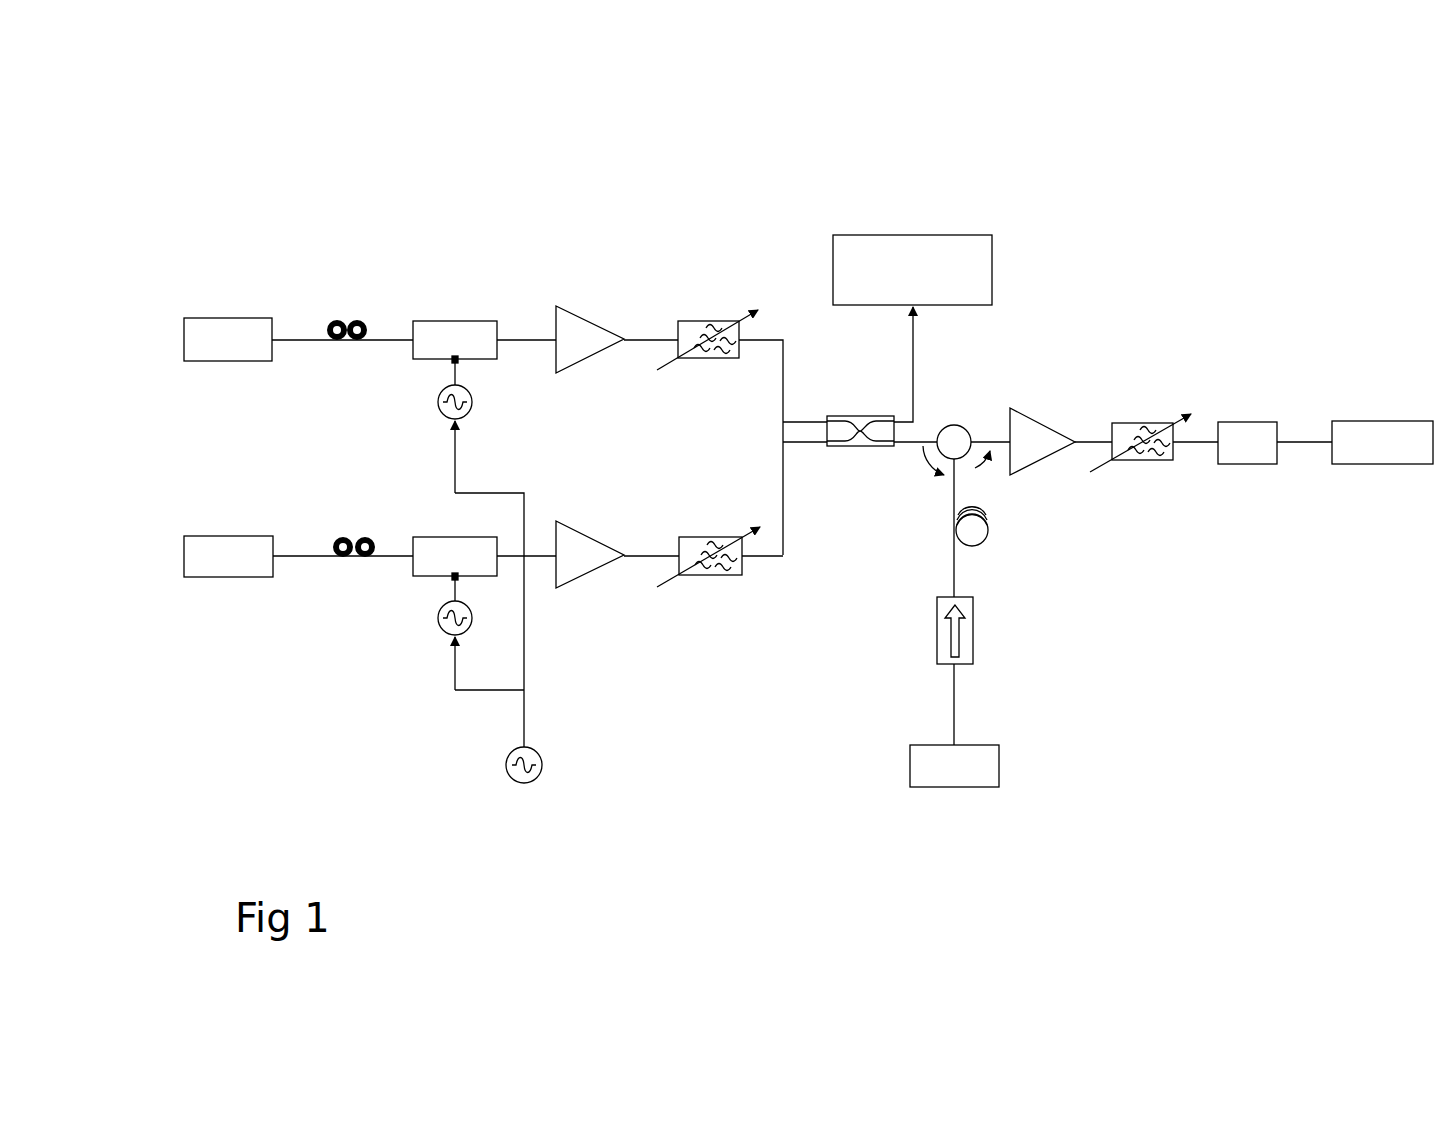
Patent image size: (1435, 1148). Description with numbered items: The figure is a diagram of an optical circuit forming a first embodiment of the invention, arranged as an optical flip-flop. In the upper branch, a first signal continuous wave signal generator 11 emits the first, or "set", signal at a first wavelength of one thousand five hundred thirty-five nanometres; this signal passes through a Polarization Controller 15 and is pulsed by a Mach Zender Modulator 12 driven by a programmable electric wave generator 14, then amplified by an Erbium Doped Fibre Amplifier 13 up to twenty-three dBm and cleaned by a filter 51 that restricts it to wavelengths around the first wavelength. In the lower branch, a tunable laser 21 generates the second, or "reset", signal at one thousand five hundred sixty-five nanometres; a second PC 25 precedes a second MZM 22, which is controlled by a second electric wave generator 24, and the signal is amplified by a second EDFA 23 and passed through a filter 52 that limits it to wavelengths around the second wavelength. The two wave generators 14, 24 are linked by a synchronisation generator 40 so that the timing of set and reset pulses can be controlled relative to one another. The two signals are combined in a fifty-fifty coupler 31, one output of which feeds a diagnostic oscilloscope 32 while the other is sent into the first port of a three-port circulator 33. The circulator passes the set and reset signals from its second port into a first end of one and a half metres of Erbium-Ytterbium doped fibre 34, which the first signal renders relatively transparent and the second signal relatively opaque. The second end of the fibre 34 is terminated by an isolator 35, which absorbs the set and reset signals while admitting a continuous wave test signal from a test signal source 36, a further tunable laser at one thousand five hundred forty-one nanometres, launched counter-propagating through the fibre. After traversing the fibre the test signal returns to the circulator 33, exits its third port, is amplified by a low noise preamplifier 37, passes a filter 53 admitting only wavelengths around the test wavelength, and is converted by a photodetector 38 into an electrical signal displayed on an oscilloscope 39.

The first signal continuous wave signal generator 11 is at (183, 338).
The Mach Zender Modulator 12 is at (454, 321).
The Erbium Doped Fibre Amplifier 13 is at (557, 307).
The programmable electric wave generator 14 is at (437, 410).
The Polarization Controller 15 is at (360, 318).
The tunable laser 21 is at (183, 556).
The second MZM 22 is at (410, 560).
The second EDFA 23 is at (558, 588).
The second electric wave generator 24 is at (438, 630).
The second PC 25 is at (343, 557).
The 50:50 coupler 31 is at (825, 416).
The oscilloscope 32 is at (913, 235).
The circulator 33 is at (958, 425).
The Erbium-Ytterbium doped fibre 34 is at (988, 540).
The isolator 35 is at (973, 630).
The test signal source 36 is at (999, 765).
The low noise preamplifier 37 is at (1017, 392).
The photodetector 38 is at (1248, 422).
The oscilloscope 39 is at (1383, 421).
The synchronisation generator 40 is at (507, 768).
The filter 51 is at (710, 322).
The filter 52 is at (710, 537).
The filter 53 is at (1145, 423).